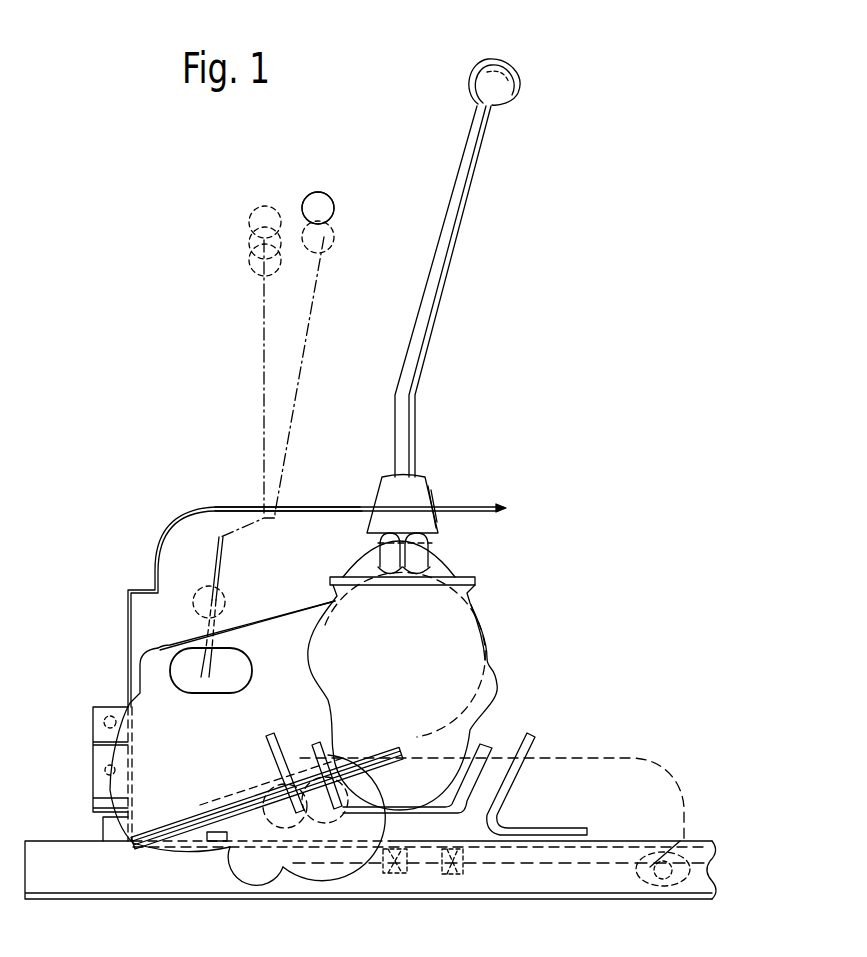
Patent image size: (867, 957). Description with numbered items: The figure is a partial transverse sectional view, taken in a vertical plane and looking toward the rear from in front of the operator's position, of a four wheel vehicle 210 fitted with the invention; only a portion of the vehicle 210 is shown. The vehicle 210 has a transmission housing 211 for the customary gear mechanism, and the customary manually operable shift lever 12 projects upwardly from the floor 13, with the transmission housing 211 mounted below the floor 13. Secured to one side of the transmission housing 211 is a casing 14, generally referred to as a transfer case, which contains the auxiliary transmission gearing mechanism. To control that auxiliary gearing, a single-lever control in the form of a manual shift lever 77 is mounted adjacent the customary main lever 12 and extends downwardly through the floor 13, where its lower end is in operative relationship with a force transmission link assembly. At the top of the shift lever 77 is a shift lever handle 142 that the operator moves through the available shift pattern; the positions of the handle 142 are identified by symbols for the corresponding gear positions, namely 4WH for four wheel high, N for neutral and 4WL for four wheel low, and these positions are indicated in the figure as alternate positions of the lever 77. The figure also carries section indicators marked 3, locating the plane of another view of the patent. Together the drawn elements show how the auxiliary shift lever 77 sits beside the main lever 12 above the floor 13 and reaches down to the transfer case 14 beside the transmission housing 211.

The shift lever 12 is at (452, 250).
The floor 13 is at (462, 506).
The casing 14 is at (302, 612).
The shift lever handle 142 is at (318, 193).
The four wheel vehicle 210 is at (126, 637).
The transmission housing 211 is at (458, 574).
The manual shift lever 77 is at (304, 336).
The section line 3- 3 is at (160, 650).
The neutral position N is at (335, 241).
The four wheel low position 4WL is at (336, 206).
The four wheel high position 4WH is at (249, 271).